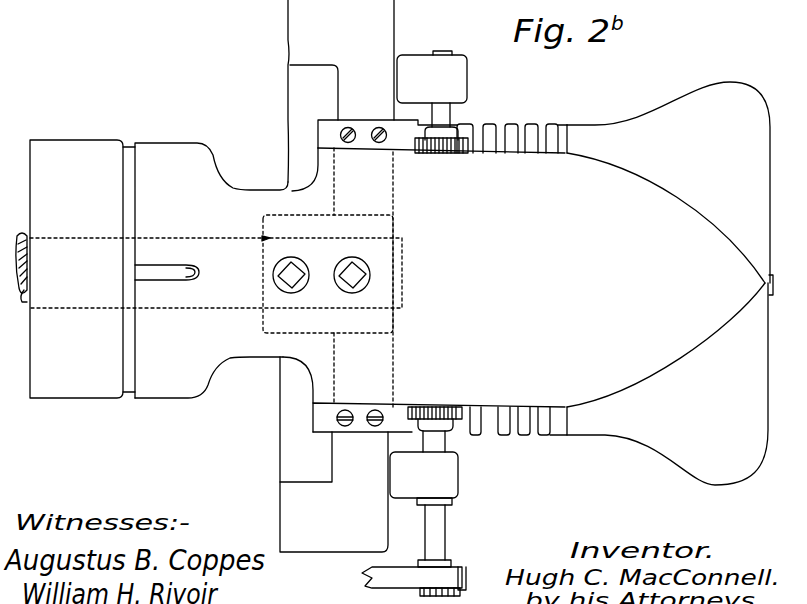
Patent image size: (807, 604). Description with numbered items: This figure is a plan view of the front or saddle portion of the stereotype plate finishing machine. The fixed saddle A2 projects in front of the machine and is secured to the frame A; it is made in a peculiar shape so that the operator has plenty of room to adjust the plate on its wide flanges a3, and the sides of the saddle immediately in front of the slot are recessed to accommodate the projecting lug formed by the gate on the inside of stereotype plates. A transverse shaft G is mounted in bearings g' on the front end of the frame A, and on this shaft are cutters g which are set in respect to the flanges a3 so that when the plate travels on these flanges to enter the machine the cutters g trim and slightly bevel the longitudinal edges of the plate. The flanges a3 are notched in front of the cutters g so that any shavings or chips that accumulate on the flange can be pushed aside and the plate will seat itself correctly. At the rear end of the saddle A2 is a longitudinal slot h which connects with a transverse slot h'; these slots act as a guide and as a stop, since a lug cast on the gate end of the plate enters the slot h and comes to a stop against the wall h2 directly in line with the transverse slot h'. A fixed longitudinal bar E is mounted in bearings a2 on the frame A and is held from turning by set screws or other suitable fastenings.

The frame A is at (422, 276).
The fixed saddle A2 is at (658, 283).
The flanges a3 is at (306, 268).
The cutters g is at (438, 289).
The bearings g' is at (428, 274).
The transverse shaft G is at (450, 116).
The longitudinal slot h is at (167, 263).
The transverse slot h' is at (211, 270).
The wall h2 is at (123, 283).
The fixed longitudinal bar E is at (19, 285).
The bearings a2 is at (388, 573).